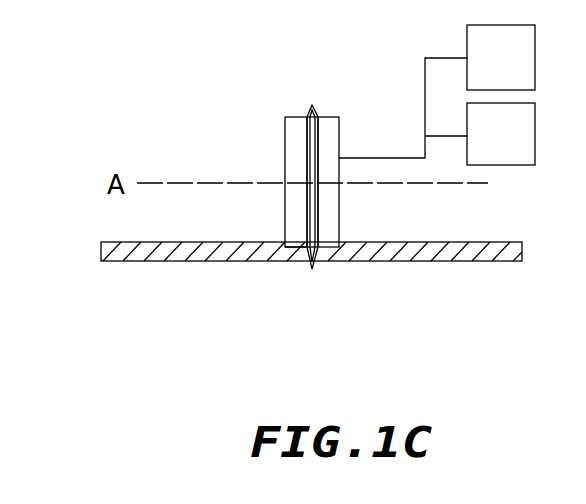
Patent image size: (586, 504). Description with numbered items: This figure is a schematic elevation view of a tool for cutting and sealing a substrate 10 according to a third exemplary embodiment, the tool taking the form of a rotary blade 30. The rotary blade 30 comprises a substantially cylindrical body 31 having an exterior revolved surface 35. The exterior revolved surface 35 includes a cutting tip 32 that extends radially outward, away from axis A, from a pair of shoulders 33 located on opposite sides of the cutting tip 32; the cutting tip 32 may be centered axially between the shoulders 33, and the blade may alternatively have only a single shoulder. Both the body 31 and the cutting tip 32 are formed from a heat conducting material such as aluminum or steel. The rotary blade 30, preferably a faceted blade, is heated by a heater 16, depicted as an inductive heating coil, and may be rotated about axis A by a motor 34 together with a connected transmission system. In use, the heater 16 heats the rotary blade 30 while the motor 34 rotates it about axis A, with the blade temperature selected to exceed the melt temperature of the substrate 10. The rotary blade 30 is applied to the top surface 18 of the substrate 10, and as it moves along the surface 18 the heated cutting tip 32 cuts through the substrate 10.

The substrate 10 is at (464, 242).
The heater 16 is at (437, 111).
The top surface 18 is at (115, 241).
The rotary blade 30 is at (285, 151).
The body 31 is at (288, 230).
The cutting tip 32 is at (312, 106).
The shoulders 33 is at (325, 101).
The motor 34 is at (501, 57).
The exterior revolved surface 35 is at (300, 116).